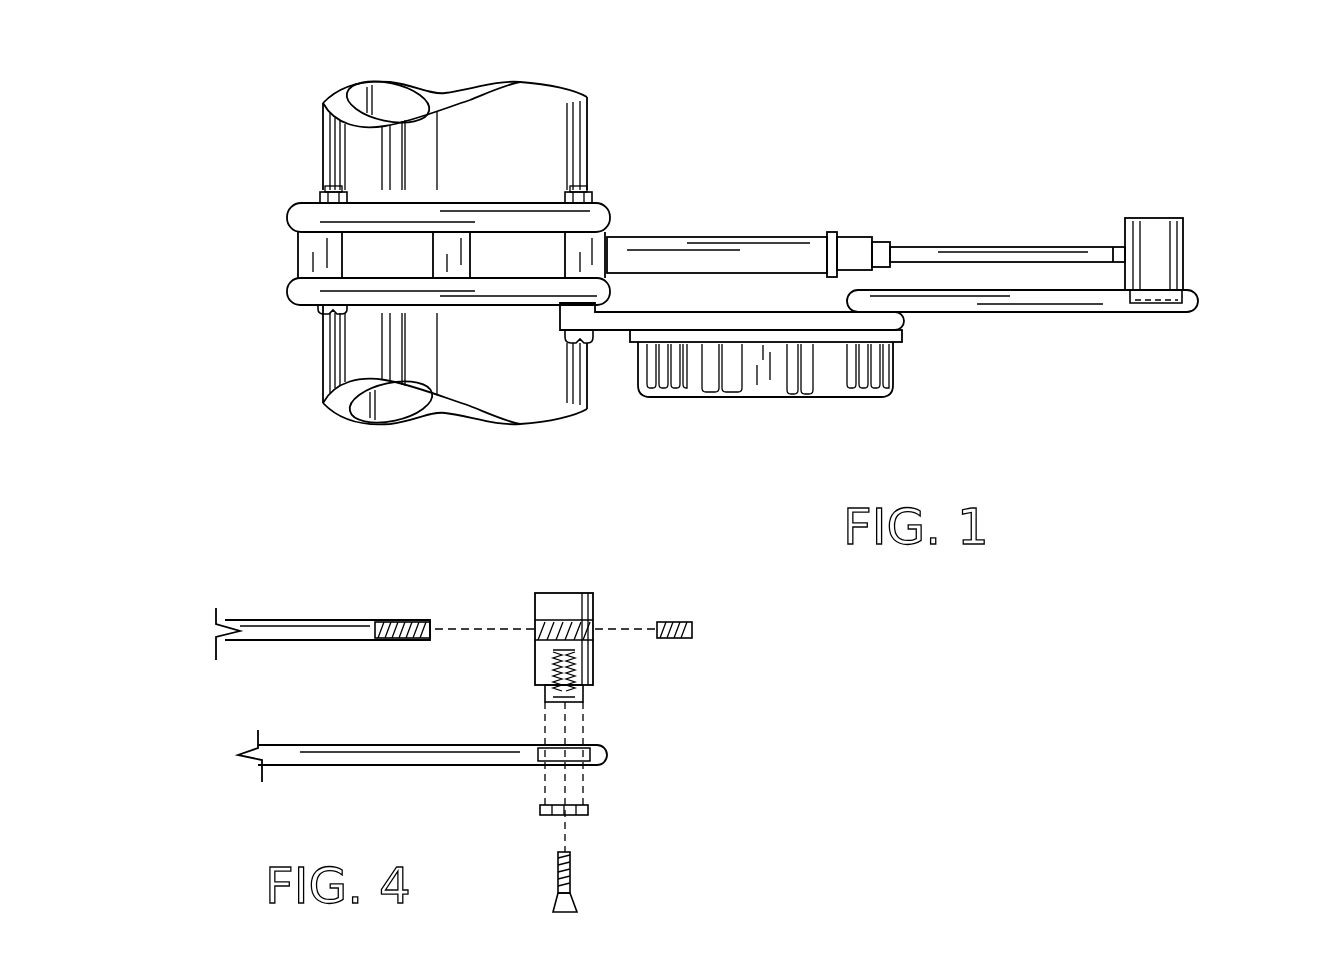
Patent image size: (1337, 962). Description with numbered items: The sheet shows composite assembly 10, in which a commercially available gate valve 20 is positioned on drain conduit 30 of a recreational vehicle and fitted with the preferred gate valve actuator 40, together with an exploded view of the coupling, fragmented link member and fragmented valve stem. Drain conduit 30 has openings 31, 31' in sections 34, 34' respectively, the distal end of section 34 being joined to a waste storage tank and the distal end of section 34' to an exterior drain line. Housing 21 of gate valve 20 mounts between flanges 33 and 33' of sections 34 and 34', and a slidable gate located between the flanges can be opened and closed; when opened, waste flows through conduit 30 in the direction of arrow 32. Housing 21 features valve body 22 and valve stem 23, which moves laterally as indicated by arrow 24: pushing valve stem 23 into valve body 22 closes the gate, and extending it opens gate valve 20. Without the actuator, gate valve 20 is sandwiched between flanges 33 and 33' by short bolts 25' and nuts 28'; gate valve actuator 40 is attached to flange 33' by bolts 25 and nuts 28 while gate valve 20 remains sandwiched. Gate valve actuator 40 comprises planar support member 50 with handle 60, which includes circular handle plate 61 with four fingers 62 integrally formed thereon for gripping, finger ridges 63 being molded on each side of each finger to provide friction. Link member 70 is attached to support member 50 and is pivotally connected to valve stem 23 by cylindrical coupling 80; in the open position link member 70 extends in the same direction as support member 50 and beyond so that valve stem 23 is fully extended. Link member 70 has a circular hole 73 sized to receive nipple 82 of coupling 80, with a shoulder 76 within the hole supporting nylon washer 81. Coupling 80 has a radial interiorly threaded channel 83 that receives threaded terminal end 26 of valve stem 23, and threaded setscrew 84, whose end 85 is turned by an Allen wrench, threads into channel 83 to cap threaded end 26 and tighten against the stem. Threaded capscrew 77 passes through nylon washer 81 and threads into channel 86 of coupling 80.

In FIG. 1, the composite assembly 10 is at (718, 145).
In FIG. 1, the gate valve 20 is at (263, 308).
In FIG. 1, the housing 21 is at (298, 250).
In FIG. 1, the valve body 22 is at (760, 233).
In FIG. 1, the valve stem 23 is at (1068, 242).
In FIG. 4, the valve stem 23 is at (283, 615).
In FIG. 1, the arrow 24 is at (957, 194).
In FIG. 1, the bolts 25 is at (596, 368).
In FIG. 1, the short bolts 25' is at (300, 335).
In FIG. 4, the threaded terminal end 26 is at (397, 617).
In FIG. 1, the nuts 28 is at (617, 184).
In FIG. 1, the nuts 28' is at (284, 179).
In FIG. 1, the drain conduit 30 is at (322, 133).
In FIG. 1, the opening 31 is at (404, 441).
In FIG. 1, the opening 31' is at (388, 81).
In FIG. 1, the arrow 32 is at (454, 70).
In FIG. 1, the flange 33 is at (402, 215).
In FIG. 1, the flange 33' is at (396, 293).
In FIG. 1, the section 34 is at (474, 124).
In FIG. 1, the section 34' is at (455, 405).
In FIG. 1, the gate valve actuator 40 is at (1120, 417).
In FIG. 1, the planar support member 50 is at (637, 308).
In FIG. 1, the handle 60 is at (813, 398).
In FIG. 1, the circular handle plate 61 is at (912, 337).
In FIG. 1, the fingers 62 is at (795, 400).
In FIG. 1, the finger ridges 63 is at (667, 385).
In FIG. 1, the link member 70 is at (1052, 312).
In FIG. 4, the link member 70 is at (363, 767).
In FIG. 4, the circular hole 73 is at (587, 765).
In FIG. 1, the shoulder 76 is at (1160, 307).
In FIG. 4, the shoulder 76 is at (540, 763).
In FIG. 4, the threaded capscrew 77 is at (580, 887).
In FIG. 1, the cylindrical coupling 80 is at (1187, 248).
In FIG. 4, the cylindrical coupling 80 is at (566, 593).
In FIG. 4, the nylon washer 81 is at (590, 808).
In FIG. 4, the nipple 82 is at (590, 695).
In FIG. 4, the radial interiorly threaded channel 83 is at (533, 622).
In FIG. 4, the threaded setscrew 84 is at (686, 617).
In FIG. 4, the end 85 is at (695, 632).
In FIG. 4, the channel 86 is at (535, 673).